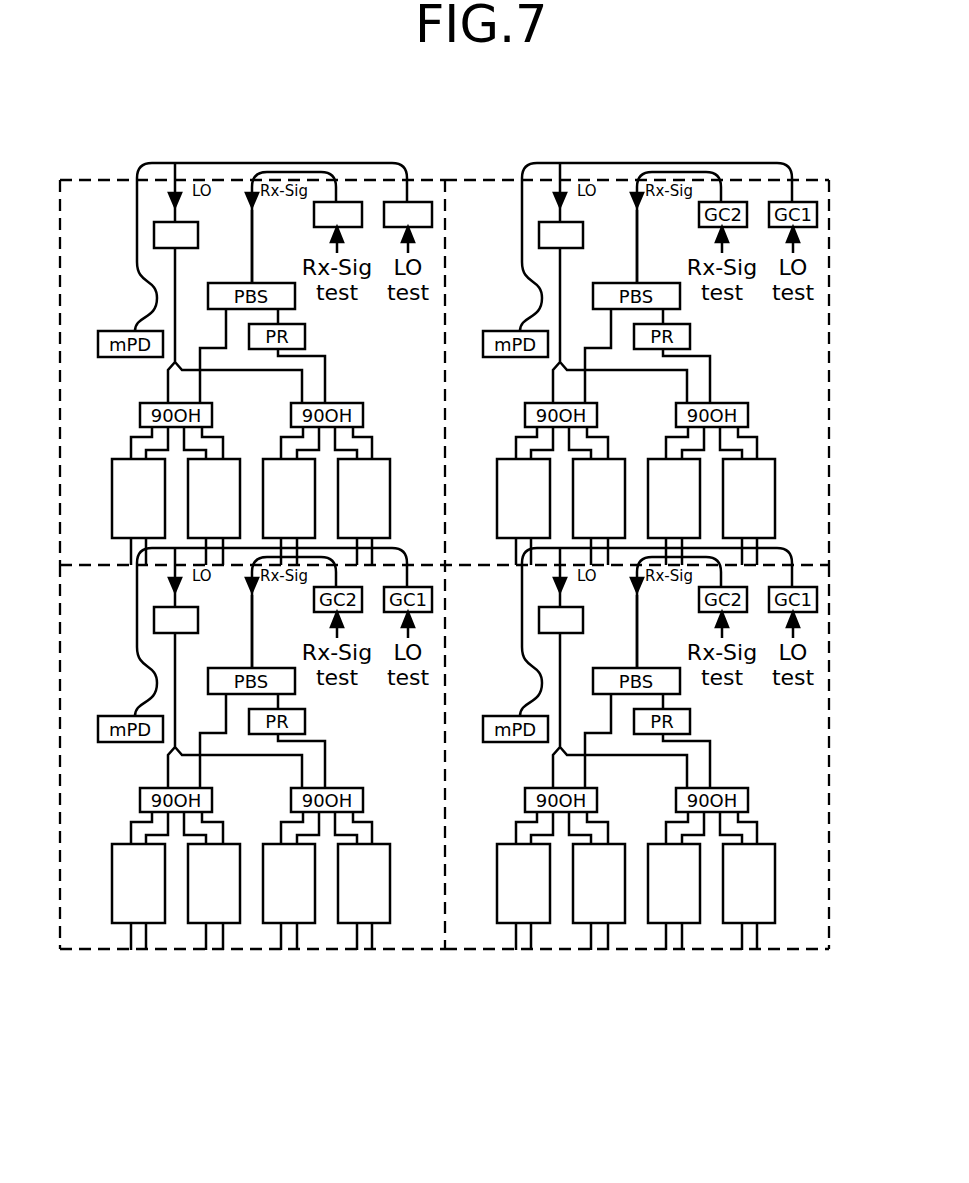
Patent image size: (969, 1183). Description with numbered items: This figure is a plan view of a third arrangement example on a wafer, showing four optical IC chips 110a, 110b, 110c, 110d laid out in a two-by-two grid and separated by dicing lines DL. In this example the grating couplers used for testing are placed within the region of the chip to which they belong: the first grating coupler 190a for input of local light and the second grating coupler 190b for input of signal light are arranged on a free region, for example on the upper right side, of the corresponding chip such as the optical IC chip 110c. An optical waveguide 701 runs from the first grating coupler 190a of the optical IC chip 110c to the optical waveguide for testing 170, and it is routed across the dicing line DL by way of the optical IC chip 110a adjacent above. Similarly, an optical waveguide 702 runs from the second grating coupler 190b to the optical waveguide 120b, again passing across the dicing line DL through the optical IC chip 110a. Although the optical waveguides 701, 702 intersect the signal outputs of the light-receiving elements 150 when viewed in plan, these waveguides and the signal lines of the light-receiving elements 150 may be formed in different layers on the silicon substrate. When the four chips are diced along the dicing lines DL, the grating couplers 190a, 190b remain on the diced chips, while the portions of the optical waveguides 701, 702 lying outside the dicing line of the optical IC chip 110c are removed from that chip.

The optical waveguide 701 is at (212, 163).
The optical waveguide 702 is at (288, 167).
The optical waveguide for testing 170 is at (137, 232).
The optical waveguide 120b is at (255, 260).
The light-receiving elements (PDs) 150 is at (402, 490).
The GC 1 190a is at (420, 202).
The GC 2 190b is at (346, 202).
The optical IC chip 110a is at (430, 188).
The optical IC chip 110b is at (813, 188).
The optical IC chip 110c is at (415, 936).
The optical IC chip 110d is at (799, 930).
The dicing line DL is at (481, 180).